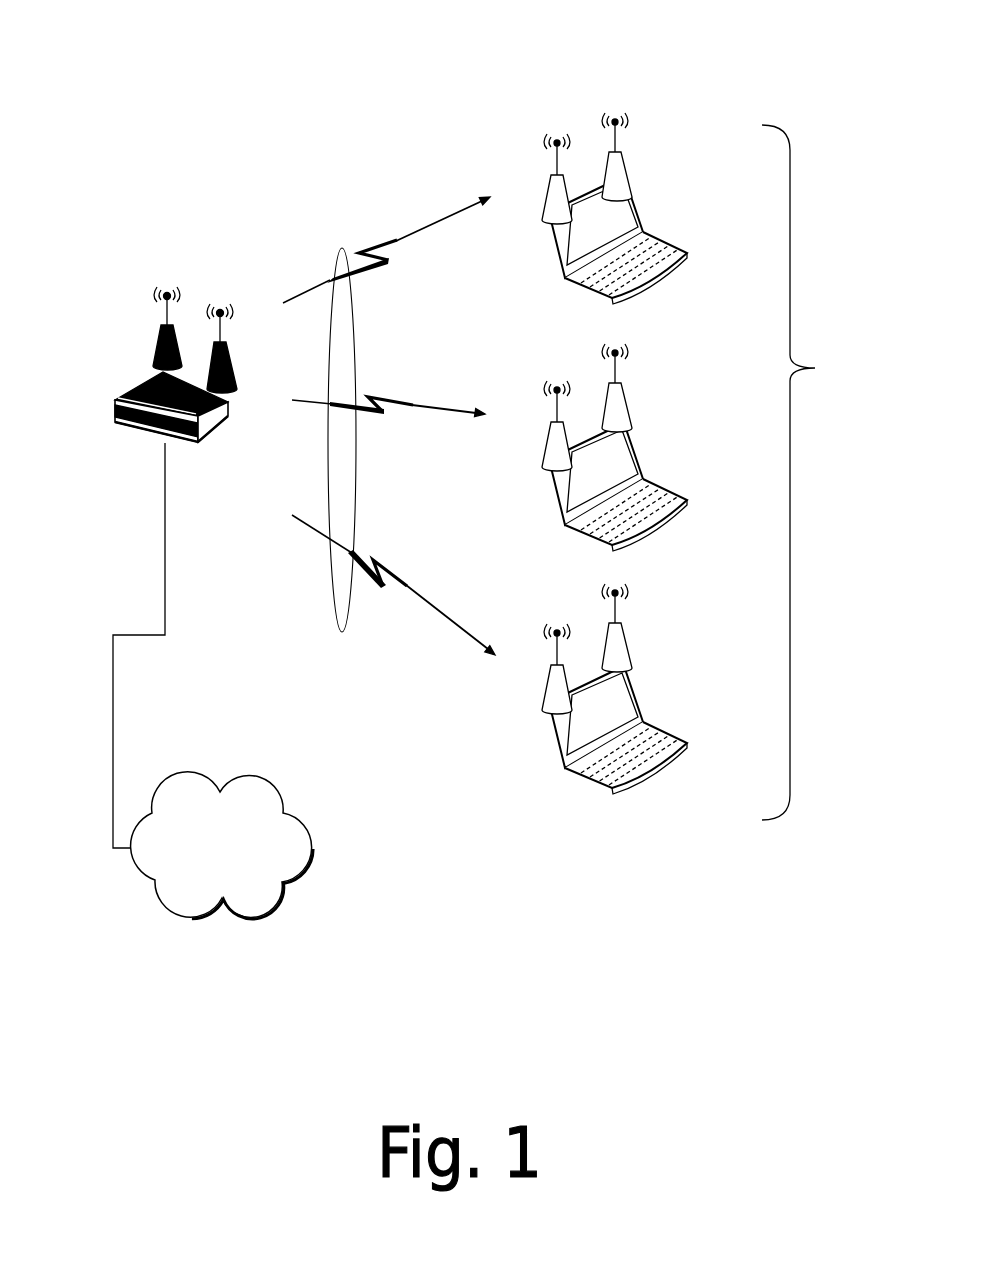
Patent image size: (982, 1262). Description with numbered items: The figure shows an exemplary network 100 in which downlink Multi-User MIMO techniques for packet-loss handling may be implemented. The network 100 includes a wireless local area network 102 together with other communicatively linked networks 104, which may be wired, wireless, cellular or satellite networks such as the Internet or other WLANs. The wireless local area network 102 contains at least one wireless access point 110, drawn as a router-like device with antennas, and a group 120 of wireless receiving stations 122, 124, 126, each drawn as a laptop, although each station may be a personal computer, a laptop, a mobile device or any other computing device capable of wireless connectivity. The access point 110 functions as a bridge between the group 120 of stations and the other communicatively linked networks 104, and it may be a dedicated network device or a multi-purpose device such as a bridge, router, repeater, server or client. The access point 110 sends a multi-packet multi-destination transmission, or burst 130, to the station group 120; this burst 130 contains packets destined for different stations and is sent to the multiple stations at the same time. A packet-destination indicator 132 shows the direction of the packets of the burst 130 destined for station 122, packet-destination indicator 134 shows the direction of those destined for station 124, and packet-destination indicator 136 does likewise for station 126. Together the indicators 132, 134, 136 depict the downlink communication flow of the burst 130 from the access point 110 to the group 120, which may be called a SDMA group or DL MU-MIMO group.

The network 100 is at (625, 1037).
The wireless local area network 102 is at (567, 37).
The other communicatively linked networks 104 is at (222, 845).
The wireless access point 110 is at (135, 427).
The group of wireless receiving stations 120 is at (820, 472).
The wireless receiving station 122 is at (687, 255).
The wireless receiving station 124 is at (687, 501).
The wireless receiving station 126 is at (687, 743).
The multi-packet multi-destination transmission 130 is at (330, 598).
The packet-destination indicator 132 is at (390, 253).
The packet-destination indicator 134 is at (380, 420).
The packet-destination indicator 136 is at (382, 562).